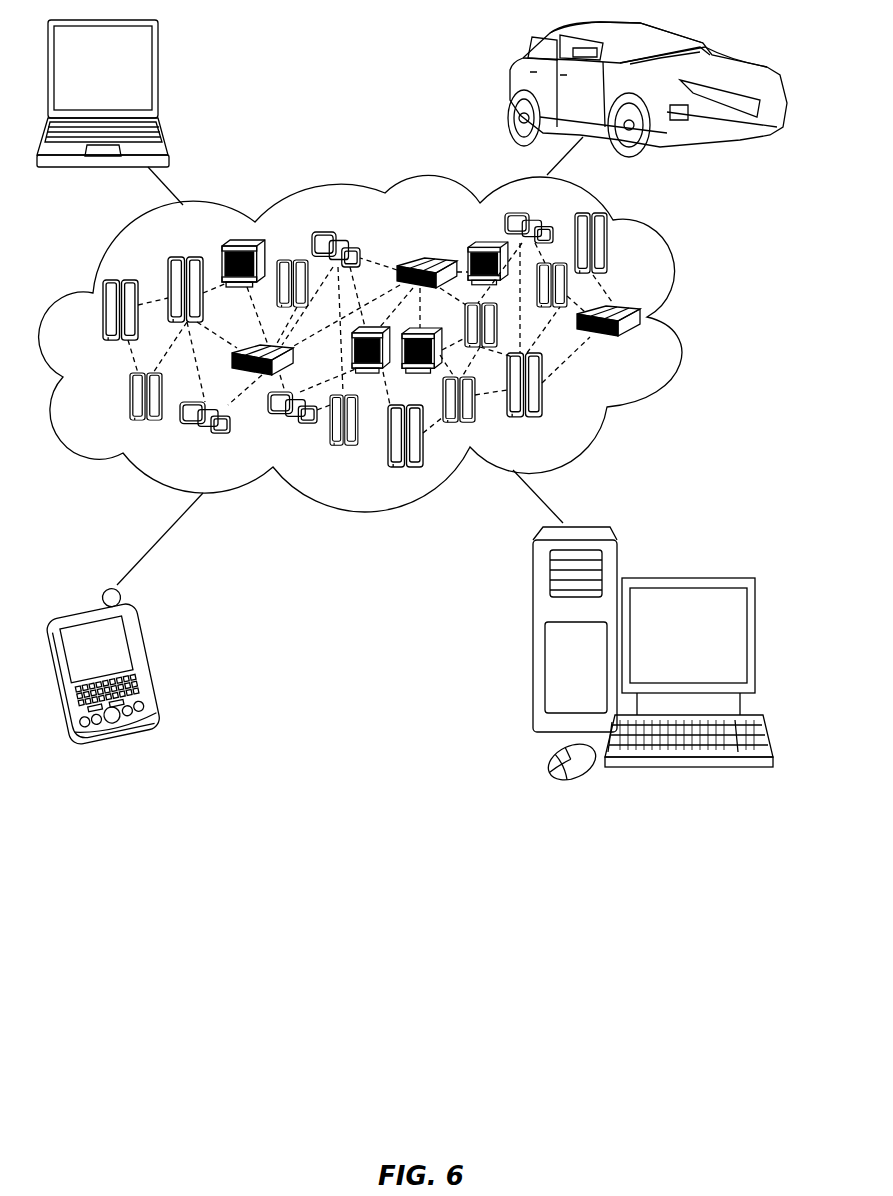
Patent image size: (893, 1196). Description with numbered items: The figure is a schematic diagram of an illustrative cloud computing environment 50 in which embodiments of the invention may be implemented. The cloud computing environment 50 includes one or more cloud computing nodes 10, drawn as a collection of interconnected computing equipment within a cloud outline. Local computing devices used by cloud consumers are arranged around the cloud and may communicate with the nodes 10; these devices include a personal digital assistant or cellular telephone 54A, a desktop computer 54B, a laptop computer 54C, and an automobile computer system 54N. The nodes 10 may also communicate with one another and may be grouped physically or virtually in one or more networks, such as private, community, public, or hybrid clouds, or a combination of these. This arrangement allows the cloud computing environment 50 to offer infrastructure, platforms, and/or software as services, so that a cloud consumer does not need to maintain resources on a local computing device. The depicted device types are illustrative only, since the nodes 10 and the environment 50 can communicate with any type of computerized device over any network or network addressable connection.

The cloud computing environment 50 is at (687, 320).
The cloud computing nodes 10 is at (648, 352).
The personal digital assistant or cellular telephone 54A is at (155, 663).
The desktop computer 54B is at (686, 578).
The laptop computer 54C is at (159, 72).
The automobile computer system 54N is at (512, 93).